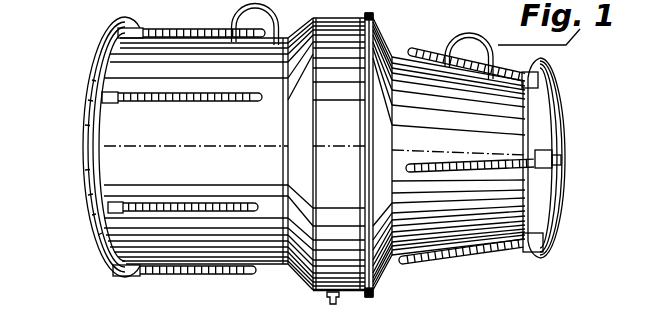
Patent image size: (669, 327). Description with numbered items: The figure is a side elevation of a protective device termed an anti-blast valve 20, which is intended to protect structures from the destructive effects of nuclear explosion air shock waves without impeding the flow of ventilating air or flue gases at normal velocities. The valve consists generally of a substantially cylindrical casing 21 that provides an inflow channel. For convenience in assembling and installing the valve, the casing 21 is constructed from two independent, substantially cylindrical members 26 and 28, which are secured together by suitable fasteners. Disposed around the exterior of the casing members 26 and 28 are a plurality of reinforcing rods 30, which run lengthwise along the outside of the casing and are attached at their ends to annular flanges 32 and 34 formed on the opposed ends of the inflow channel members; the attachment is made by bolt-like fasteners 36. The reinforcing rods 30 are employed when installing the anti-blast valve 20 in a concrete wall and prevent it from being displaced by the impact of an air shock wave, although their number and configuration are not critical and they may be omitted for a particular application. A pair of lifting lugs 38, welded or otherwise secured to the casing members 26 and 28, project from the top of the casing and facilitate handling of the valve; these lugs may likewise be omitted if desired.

The anti-blast valve 20 is at (75, 58).
The cylindrical casing 21 is at (381, 277).
The cylindrical member 26 is at (270, 265).
The cylindrical member 28 is at (398, 72).
The reinforcing rods 30 is at (212, 200).
The annular flange 32 is at (83, 153).
The annular flange 34 is at (558, 172).
The bolt-like fasteners 36 is at (126, 39).
The lifting lugs 38 is at (233, 13).